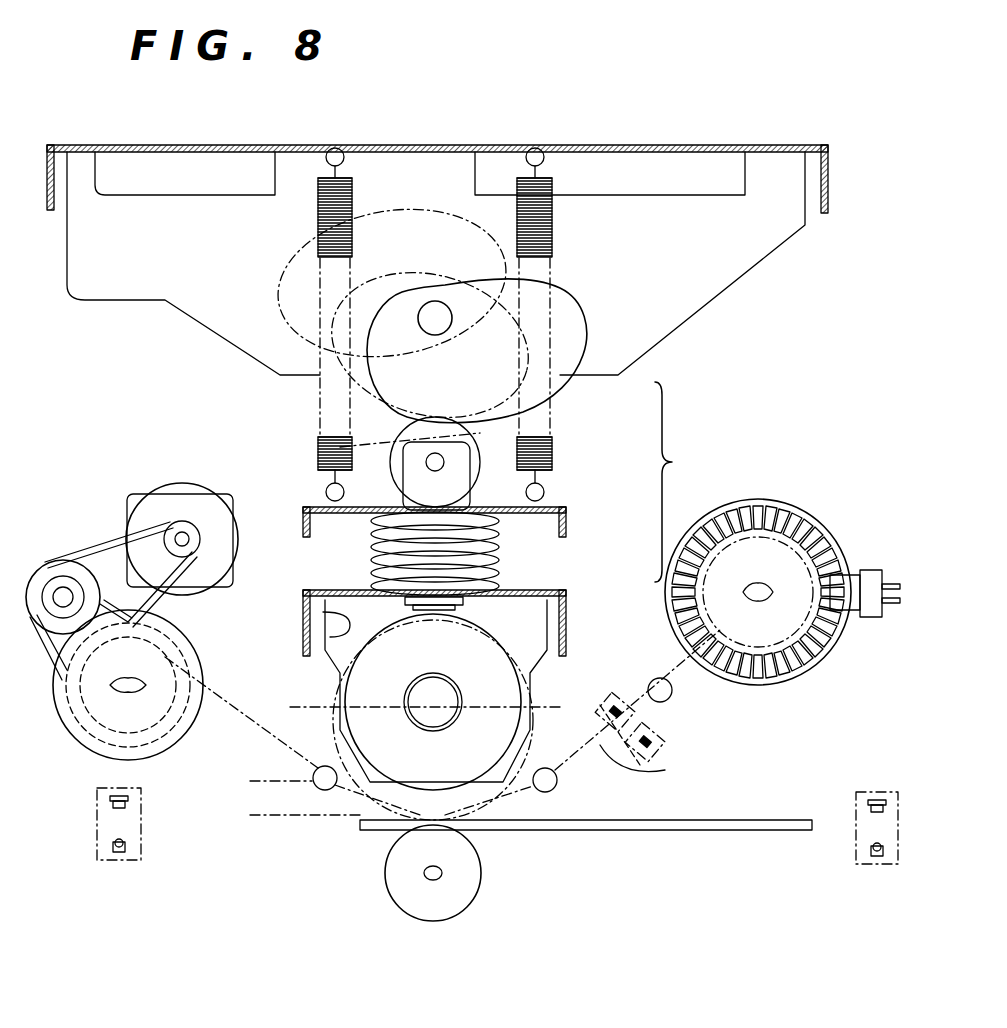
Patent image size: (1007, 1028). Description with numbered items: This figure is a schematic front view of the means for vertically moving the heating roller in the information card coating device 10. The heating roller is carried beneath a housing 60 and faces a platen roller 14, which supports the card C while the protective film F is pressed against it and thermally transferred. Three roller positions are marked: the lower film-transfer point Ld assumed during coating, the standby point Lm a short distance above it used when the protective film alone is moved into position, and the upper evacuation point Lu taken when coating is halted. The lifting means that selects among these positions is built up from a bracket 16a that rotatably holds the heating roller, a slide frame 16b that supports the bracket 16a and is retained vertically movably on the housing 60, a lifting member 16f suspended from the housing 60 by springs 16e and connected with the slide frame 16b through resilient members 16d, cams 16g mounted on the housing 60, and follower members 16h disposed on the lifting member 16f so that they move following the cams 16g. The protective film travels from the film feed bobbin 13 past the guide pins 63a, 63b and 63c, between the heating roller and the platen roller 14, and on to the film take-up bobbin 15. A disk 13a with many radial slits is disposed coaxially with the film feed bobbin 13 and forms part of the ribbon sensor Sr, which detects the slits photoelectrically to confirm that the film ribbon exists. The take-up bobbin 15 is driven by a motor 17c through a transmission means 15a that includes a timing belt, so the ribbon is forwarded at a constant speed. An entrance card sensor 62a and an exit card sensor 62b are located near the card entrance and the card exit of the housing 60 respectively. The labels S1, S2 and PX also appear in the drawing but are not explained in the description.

The coating device 10 is at (680, 136).
The housing 60 is at (655, 145).
The bracket 16a is at (543, 613).
The slide frame 16b is at (560, 592).
The resilient members 16d is at (503, 537).
The springs 16e is at (555, 435).
The lifting member 16f is at (560, 507).
The cams 16g is at (565, 385).
The follower members 16h is at (348, 450).
The motor 17c is at (193, 500).
The film take-up bobbin 15 is at (88, 745).
The transmission means 15a is at (52, 566).
The film feed bobbin 13 is at (836, 530).
The disk 13a is at (800, 555).
The ribbon sensor Sr is at (868, 575).
The guide pin 63a is at (670, 697).
The guide pin 63b is at (557, 786).
The guide pin 63c is at (320, 768).
The sensor S1 is at (694, 728).
The sensor S2 is at (668, 738).
The protective film F is at (640, 760).
The upper evacuation point Lu is at (292, 736).
The standby point Lm is at (265, 780).
The film-transfer point Ld is at (289, 815).
The nip position PX is at (385, 838).
The platen roller 14 is at (470, 893).
The card C is at (640, 830).
The entrance card sensor 62a is at (855, 828).
The exit card sensor 62b is at (140, 828).